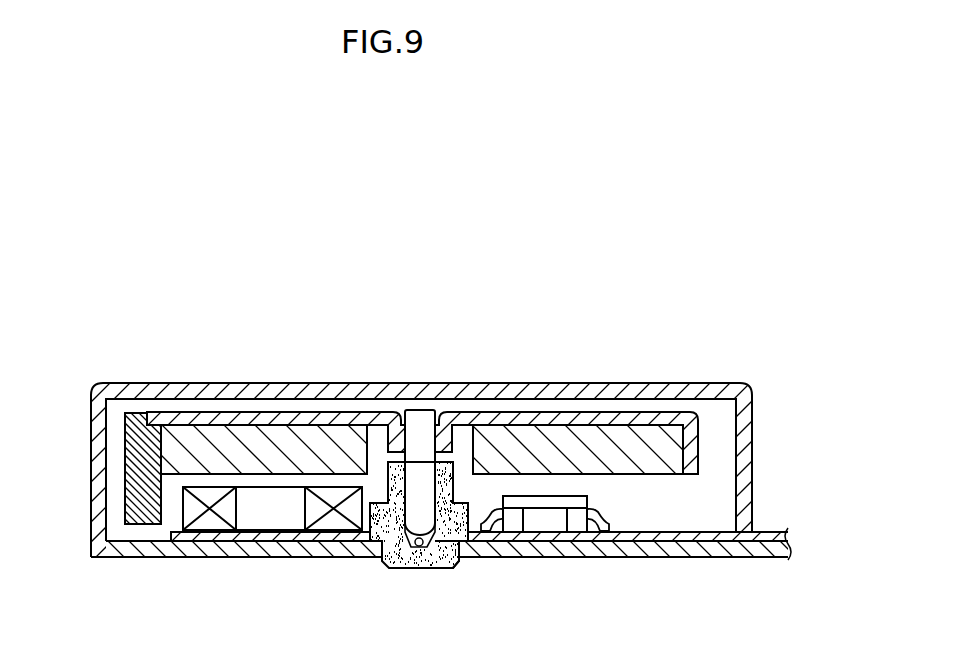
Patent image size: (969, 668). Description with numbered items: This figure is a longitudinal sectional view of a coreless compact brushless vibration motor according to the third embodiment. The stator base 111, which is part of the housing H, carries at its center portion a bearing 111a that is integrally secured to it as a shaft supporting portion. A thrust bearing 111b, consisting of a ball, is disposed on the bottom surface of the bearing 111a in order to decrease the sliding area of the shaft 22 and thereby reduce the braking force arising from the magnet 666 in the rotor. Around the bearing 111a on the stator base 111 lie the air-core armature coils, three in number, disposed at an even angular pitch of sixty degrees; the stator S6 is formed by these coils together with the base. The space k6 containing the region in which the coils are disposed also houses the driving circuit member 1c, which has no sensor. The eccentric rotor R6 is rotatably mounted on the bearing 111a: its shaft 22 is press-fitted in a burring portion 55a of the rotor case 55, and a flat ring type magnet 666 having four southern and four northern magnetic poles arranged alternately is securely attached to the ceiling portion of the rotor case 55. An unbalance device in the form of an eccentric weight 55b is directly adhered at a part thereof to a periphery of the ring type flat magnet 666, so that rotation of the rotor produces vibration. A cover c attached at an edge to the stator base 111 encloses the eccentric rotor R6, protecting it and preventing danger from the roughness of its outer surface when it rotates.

The cover c is at (752, 420).
The stator base 111 is at (223, 552).
The eccentric weight 55b is at (136, 410).
The rotor case 55 is at (225, 413).
The burring portion 55a is at (470, 427).
The ring type magnet 666 is at (305, 427).
The shaft 22 is at (422, 411).
The bearing 111a is at (397, 530).
The thrust bearing 111b is at (433, 548).
The space / coil region S6 is at (293, 508).
The driving circuit member 1c is at (588, 498).
The space k6 is at (685, 510).
The eccentric rotor R6 is at (118, 453).
The housing H is at (73, 531).